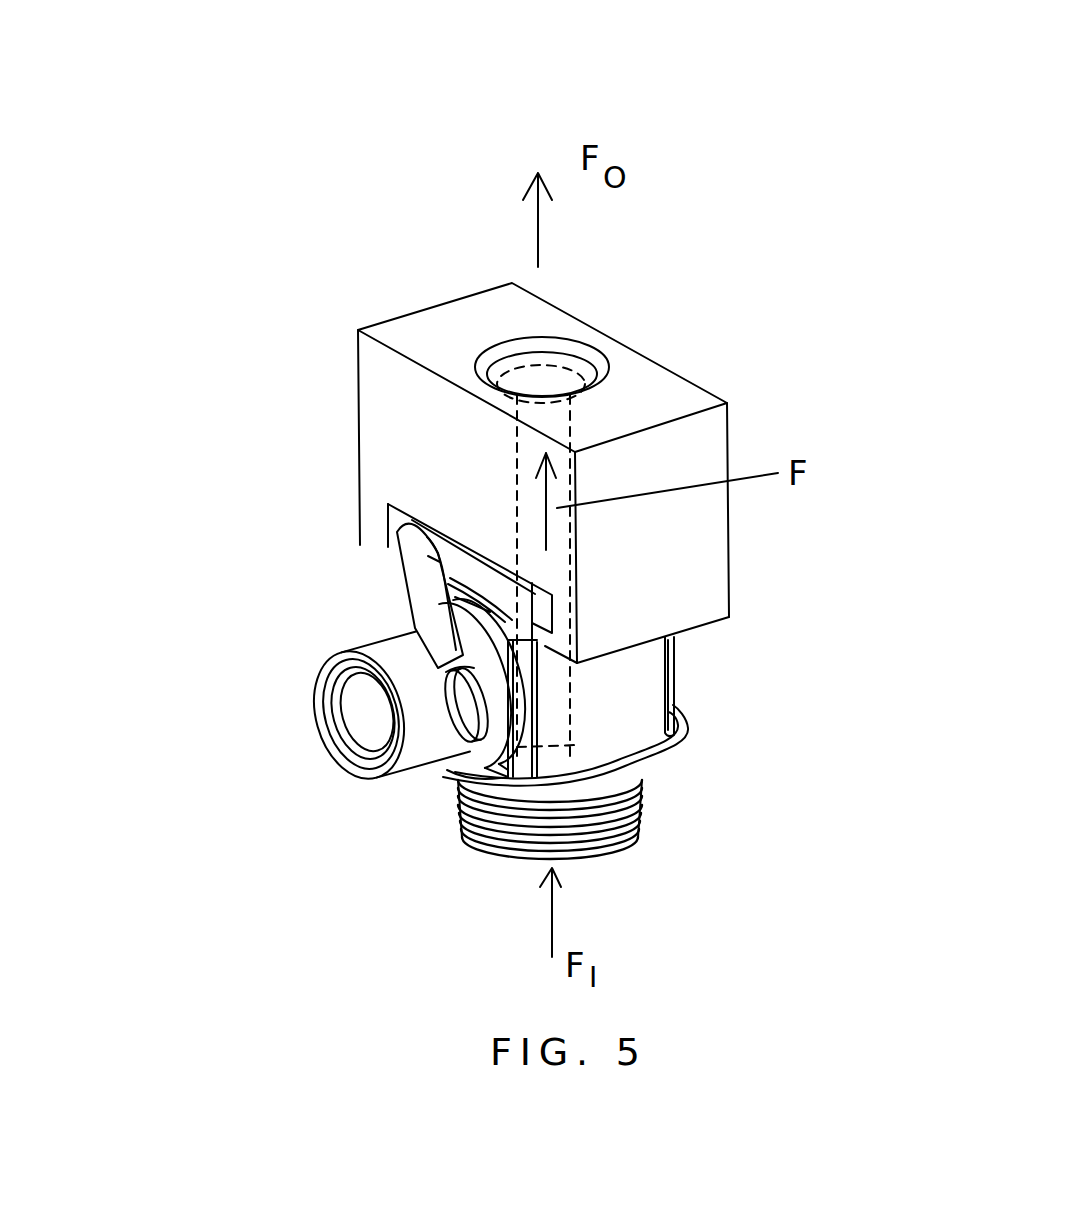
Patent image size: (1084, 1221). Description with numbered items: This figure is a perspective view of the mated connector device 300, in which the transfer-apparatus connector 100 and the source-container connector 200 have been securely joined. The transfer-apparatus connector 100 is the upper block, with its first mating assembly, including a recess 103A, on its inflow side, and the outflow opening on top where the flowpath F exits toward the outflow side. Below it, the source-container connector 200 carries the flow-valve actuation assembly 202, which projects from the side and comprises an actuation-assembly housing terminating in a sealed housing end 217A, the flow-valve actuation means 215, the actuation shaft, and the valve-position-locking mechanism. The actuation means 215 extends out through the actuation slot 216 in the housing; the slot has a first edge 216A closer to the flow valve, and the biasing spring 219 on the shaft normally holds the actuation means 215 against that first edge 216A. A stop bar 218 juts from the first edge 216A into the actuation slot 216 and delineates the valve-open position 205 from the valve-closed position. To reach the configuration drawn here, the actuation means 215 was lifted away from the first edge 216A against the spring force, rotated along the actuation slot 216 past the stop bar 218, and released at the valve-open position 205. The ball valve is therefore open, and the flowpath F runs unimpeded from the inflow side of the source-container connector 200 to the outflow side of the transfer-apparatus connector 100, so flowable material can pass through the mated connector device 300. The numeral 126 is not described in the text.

The connector device 300 is at (767, 131).
The transfer-apparatus connector 100 is at (427, 251).
The recess 103A is at (393, 558).
The fluid outlet passage 126 is at (555, 575).
The flow-valve actuation means 215 is at (417, 582).
The source-container connector 200 is at (712, 798).
The flow-valve actuation assembly 202 is at (393, 660).
The valve-open position 205 is at (453, 672).
The actuation slot 216 is at (447, 770).
The first edge 216A is at (482, 765).
The sealed housing end 217A is at (368, 722).
The stop bar 218 is at (462, 712).
The biasing spring 219 is at (472, 697).